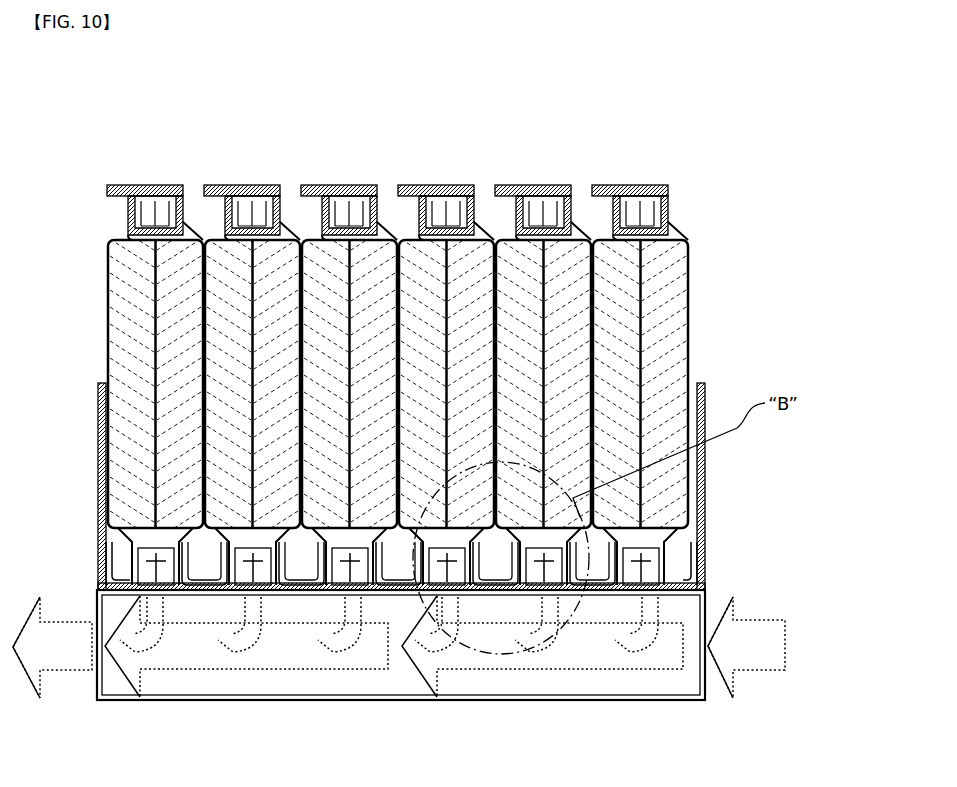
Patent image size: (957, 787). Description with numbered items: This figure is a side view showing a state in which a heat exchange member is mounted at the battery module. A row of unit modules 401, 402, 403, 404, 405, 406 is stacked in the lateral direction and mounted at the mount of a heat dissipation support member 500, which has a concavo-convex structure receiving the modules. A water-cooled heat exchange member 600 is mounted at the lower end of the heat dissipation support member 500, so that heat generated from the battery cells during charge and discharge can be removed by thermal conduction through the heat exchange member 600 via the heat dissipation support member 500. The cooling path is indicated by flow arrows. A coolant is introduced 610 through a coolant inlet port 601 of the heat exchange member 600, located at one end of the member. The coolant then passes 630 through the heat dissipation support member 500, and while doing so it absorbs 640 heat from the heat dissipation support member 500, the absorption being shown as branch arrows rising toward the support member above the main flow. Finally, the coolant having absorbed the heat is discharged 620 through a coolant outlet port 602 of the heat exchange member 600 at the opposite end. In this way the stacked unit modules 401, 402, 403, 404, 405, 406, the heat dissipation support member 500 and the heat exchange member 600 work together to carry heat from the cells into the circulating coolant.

The unit module 401 is at (160, 152).
The unit module 402 is at (252, 152).
The unit module 403 is at (350, 152).
The unit module 404 is at (442, 152).
The unit module 405 is at (540, 152).
The unit module 406 is at (640, 152).
The heat dissipation support member 500 is at (712, 530).
The heat exchange member 600 is at (712, 596).
The coolant inlet port 601 is at (690, 685).
The coolant outlet port 602 is at (122, 690).
The introduction of coolant 610 is at (755, 662).
The discharge of coolant 620 is at (60, 665).
The passage of coolant 630 is at (363, 662).
The absorption of heat 640 is at (152, 652).